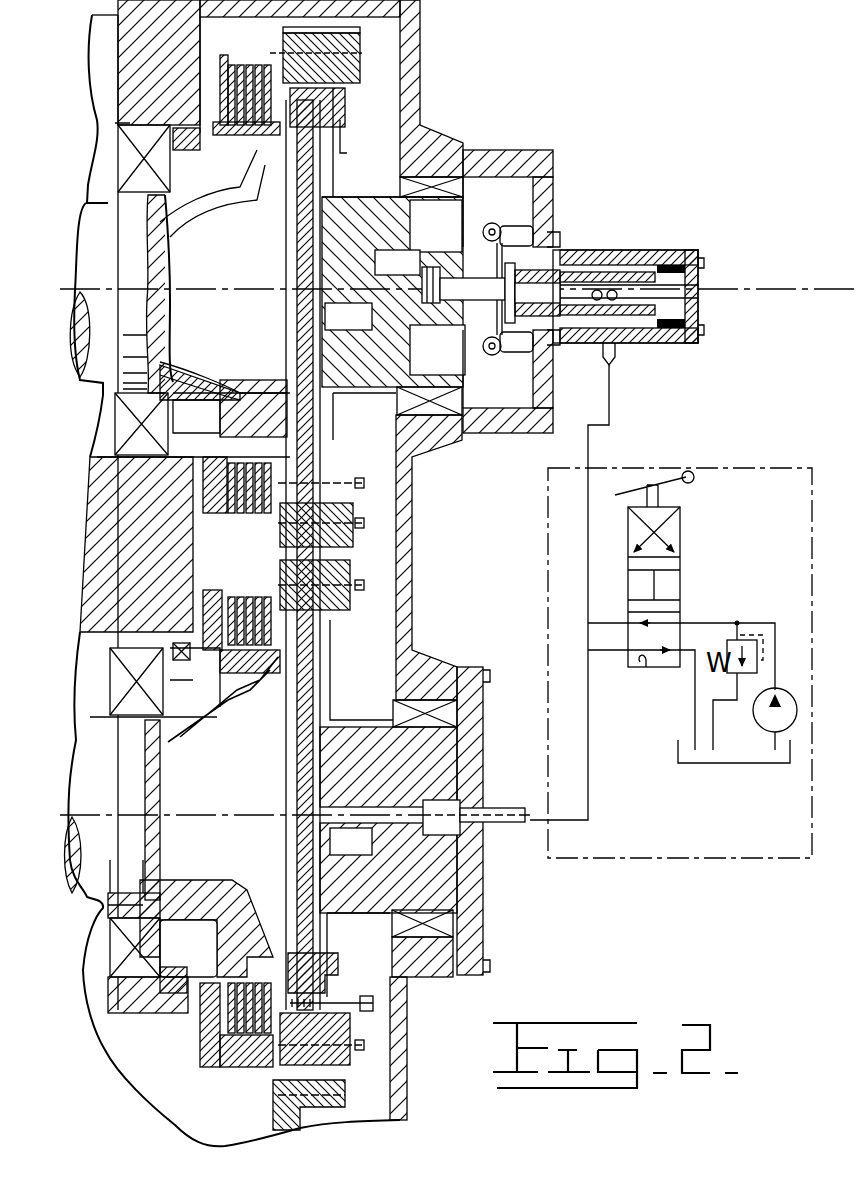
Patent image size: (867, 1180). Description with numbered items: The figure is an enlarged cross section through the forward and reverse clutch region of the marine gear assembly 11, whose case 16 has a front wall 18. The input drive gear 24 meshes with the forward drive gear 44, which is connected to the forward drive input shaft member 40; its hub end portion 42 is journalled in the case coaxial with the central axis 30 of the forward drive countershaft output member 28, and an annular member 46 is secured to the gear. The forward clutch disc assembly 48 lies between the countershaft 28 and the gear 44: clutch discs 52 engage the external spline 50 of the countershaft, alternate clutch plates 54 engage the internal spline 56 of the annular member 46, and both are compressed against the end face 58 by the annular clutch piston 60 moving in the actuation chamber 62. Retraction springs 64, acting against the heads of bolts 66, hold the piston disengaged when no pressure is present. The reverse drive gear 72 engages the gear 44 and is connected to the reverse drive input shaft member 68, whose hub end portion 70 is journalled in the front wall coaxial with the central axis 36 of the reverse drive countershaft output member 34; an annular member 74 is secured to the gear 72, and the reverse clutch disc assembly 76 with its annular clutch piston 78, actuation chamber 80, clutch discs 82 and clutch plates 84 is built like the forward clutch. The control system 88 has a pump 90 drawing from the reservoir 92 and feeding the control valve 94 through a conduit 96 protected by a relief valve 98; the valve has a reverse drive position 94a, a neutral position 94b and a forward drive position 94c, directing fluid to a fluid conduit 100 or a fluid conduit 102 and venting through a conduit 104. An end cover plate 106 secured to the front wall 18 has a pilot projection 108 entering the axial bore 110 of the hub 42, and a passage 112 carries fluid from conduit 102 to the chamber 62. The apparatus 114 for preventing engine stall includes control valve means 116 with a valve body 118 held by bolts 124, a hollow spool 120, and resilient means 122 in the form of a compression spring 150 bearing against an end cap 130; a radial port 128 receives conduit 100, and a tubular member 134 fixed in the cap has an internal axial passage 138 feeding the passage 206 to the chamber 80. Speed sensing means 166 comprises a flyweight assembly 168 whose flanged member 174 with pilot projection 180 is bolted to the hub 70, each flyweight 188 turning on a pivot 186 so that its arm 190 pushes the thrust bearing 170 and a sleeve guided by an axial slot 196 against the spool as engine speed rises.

The marine gear assembly 11 is at (423, 53).
The case 16 is at (168, 31).
The front wall 18 is at (420, 92).
The input drive gear 24 is at (280, 1110).
The forward drive countershaft output member 28 is at (87, 900).
The central axis 30 is at (250, 813).
The reverse drive countershaft output member 34 is at (88, 196).
The central axis 36 is at (212, 289).
The forward drive input shaft member 40 is at (329, 692).
The hub end portion 42 is at (480, 887).
The forward drive gear 44 is at (345, 572).
The annular member 46 is at (203, 1012).
The forward clutch disc assembly 48 is at (236, 1073).
The external spline 50 is at (262, 648).
The clutch discs 52 is at (252, 979).
The clutch plates 54 is at (250, 1040).
The internal spline 56 is at (215, 598).
The end face 58 is at (222, 613).
The annular clutch piston 60 is at (337, 981).
The actuation chamber 62 is at (333, 624).
The retraction springs 64 is at (351, 1010).
The bolts 66 is at (377, 1007).
The reverse drive input shaft member 68 is at (341, 170).
The hub end portion 70 is at (385, 383).
The reverse drive gear 72 is at (350, 120).
The annular member 74 is at (225, 496).
The reverse clutch disc assembly 76 is at (216, 78).
The annular clutch piston 78 is at (347, 140).
The actuation chamber 80 is at (312, 100).
The clutch discs 82 is at (250, 128).
The clutch plates 84 is at (230, 60).
The control system 88 is at (685, 463).
The pump 90 is at (770, 723).
The reservoir 92 is at (720, 765).
The control valve 94 is at (684, 547).
The reverse drive position 94a is at (650, 665).
The neutral position 94b is at (677, 587).
The forward drive position 94c is at (677, 517).
The conduit 96 is at (720, 625).
The relief valve 98 is at (733, 673).
The fluid conduit 100 is at (580, 500).
The fluid conduit 102 is at (588, 792).
The conduit 104 is at (694, 715).
The end cover plate 106 is at (467, 933).
The pilot projection 108 is at (441, 796).
The axial bore 110 is at (446, 840).
The passage 112 is at (387, 820).
The apparatus for preventing engine stall 114 is at (493, 146).
The control valve means 116 is at (678, 348).
The valve body 118 is at (512, 152).
The spool 120 is at (637, 253).
The resilient means 122 is at (677, 260).
The bolts 124 is at (556, 173).
The radial port 128 is at (615, 347).
The end cap 130 is at (697, 317).
The tubular member 134 is at (697, 270).
The internal axial passage 138 is at (697, 297).
The compression spring 150 is at (665, 263).
The speed sensing means 166 is at (525, 222).
The flyweight assembly 168 is at (468, 403).
The thrust bearing 170 is at (468, 322).
The flanged member 174 is at (465, 207).
The pilot projection 180 is at (425, 268).
The pivot 186 is at (482, 233).
The flyweight 188 is at (535, 227).
The arm 190 is at (460, 352).
The axial slot 196 is at (567, 247).
The passage 206 is at (384, 300).